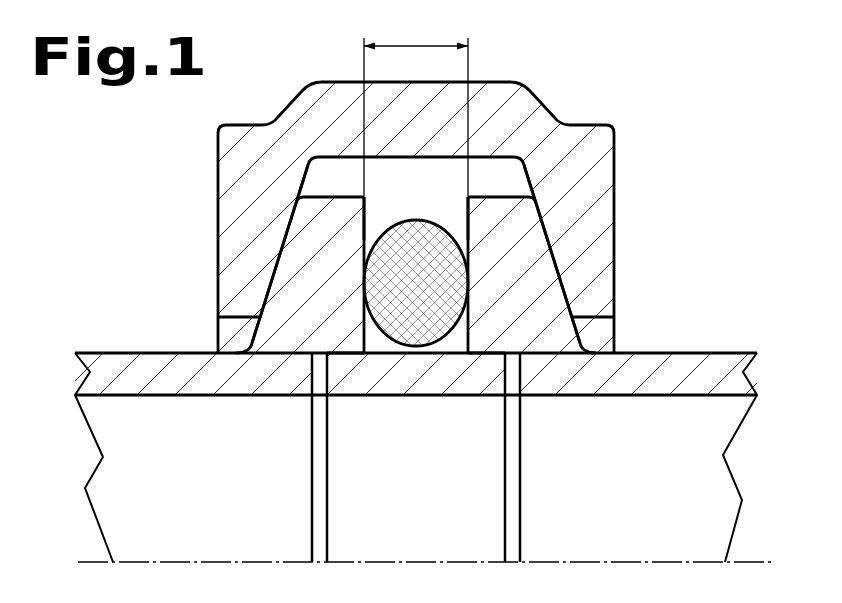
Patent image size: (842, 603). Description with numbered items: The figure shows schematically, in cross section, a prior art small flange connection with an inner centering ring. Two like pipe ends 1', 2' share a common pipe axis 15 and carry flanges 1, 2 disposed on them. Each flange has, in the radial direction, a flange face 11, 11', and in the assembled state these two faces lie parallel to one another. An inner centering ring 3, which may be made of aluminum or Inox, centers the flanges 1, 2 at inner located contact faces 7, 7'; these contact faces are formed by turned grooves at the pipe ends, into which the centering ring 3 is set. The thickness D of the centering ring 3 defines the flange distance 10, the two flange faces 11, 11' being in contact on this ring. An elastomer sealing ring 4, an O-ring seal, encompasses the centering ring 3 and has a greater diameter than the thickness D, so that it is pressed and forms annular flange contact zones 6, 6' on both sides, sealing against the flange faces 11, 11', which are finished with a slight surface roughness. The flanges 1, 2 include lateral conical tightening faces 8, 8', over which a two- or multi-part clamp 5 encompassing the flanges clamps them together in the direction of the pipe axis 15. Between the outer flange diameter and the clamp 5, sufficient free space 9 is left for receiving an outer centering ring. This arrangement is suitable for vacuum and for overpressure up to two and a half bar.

The flange 1 is at (248, 252).
The pipe end 1' is at (127, 424).
The flange 2 is at (603, 254).
The pipe end 2' is at (723, 425).
The inner centering ring 3 is at (416, 420).
The elastomer sealing ring 4 is at (416, 353).
The clamp 5 is at (444, 208).
The annular flange contact zone 6 is at (247, 275).
The annular flange contact zone 6' is at (608, 275).
The inner located contact face 7 is at (300, 412).
The inner located contact face 7' is at (545, 412).
The conical tightening face 8 is at (219, 254).
The conical tightening face 8' is at (636, 254).
The free space 9 is at (416, 182).
The flange distance 10 is at (370, 180).
The flange face 11 is at (243, 182).
The flange face 11' is at (616, 187).
The pipe axis 15 is at (426, 534).